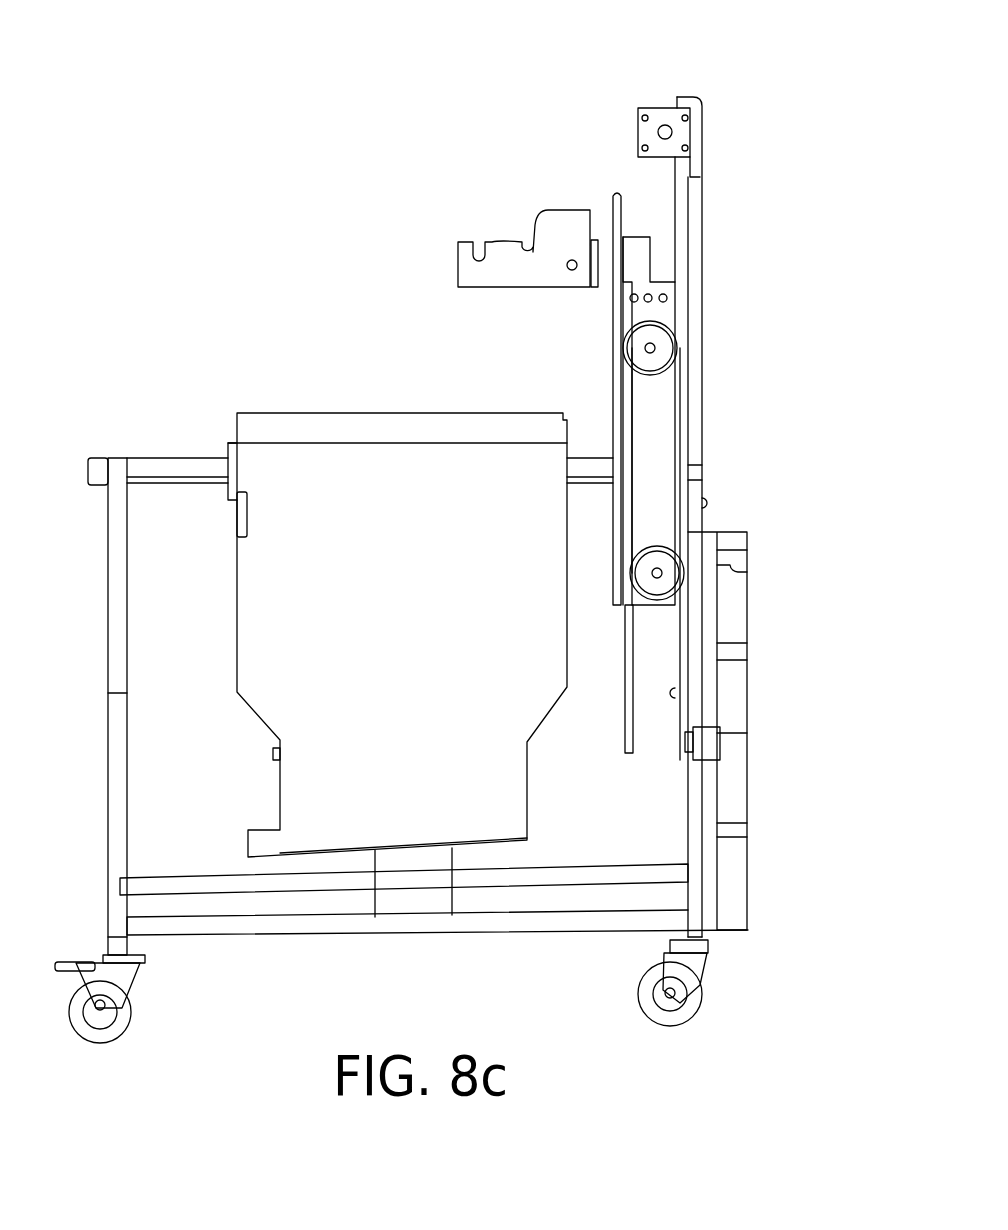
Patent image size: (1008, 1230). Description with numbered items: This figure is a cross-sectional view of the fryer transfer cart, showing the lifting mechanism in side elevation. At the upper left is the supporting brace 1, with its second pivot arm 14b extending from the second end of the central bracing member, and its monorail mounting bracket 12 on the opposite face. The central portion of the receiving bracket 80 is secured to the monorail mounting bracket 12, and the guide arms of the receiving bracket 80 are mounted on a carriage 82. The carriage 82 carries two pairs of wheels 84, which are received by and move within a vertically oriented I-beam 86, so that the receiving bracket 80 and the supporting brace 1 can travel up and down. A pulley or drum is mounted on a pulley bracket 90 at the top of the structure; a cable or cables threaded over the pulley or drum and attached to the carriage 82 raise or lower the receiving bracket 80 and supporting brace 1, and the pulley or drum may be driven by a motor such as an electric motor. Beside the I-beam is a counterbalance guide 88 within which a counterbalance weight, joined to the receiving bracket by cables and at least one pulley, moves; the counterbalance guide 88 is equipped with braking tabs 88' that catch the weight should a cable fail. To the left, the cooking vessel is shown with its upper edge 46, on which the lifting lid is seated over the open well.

The supporting brace 1 is at (538, 207).
The monorail mounting bracket 12 is at (585, 290).
The second pivot arm 14b is at (458, 266).
The upper edge 46 is at (278, 412).
The receiving bracket 80 is at (609, 270).
The carriage 82 is at (650, 440).
The wheels 84 is at (663, 350).
The I-beam 86 is at (622, 722).
The counterbalance guide 88 is at (764, 731).
The braking tabs 88' is at (777, 587).
The pulley bracket 90 is at (653, 108).